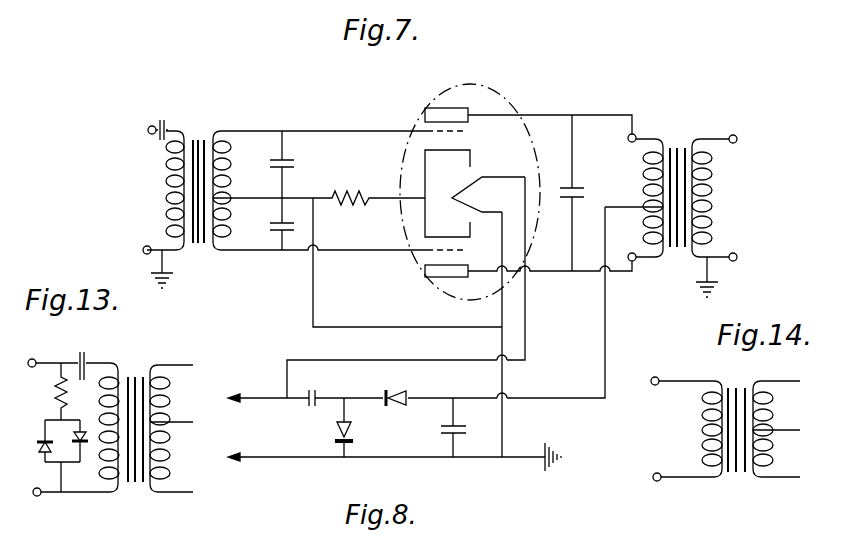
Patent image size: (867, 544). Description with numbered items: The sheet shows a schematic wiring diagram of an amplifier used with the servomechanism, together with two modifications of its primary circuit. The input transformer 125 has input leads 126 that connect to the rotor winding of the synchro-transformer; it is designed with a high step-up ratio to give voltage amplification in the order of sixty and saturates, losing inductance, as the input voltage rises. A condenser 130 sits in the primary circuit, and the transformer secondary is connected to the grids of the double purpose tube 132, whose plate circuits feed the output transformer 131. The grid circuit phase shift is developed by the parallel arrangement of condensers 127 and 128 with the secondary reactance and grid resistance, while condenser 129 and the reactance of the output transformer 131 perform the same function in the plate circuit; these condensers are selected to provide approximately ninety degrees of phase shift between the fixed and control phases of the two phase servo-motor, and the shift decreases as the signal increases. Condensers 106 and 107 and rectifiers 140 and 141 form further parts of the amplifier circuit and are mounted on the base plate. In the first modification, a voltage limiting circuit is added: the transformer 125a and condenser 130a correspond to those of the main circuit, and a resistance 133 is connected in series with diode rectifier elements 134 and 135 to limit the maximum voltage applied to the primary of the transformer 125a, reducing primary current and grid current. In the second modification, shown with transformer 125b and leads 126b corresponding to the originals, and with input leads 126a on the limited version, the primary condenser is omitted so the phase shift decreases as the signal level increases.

In FIG. 7, the condenser 106 is at (307, 399).
In FIG. 7, the condenser 107 is at (444, 426).
In FIG. 7, the input transformer 125 is at (203, 130).
In FIG. 13, the transformer 125a is at (135, 371).
In FIG. 14, the input transformer 125b is at (738, 474).
In FIG. 7, the input leads 126 is at (149, 133).
In FIG. 13, the input terminals 126a is at (32, 515).
In FIG. 14, the input terminals 126b is at (657, 473).
In FIG. 7, the condenser 127 is at (271, 159).
In FIG. 7, the condenser 128 is at (271, 231).
In FIG. 7, the condenser 129 is at (576, 187).
In FIG. 7, the condenser 130 is at (166, 118).
In FIG. 13, the condenser 130a is at (86, 351).
In FIG. 7, the output transformer 131 is at (683, 140).
In FIG. 7, the double purpose tube 132 is at (517, 107).
In FIG. 13, the resistance 133 is at (59, 396).
In FIG. 13, the diode rectifier element 134 is at (41, 440).
In FIG. 13, the diode rectifier element 135 is at (82, 430).
In FIG. 7, the rectifier 140 is at (401, 392).
In FIG. 7, the rectifier 141 is at (354, 432).